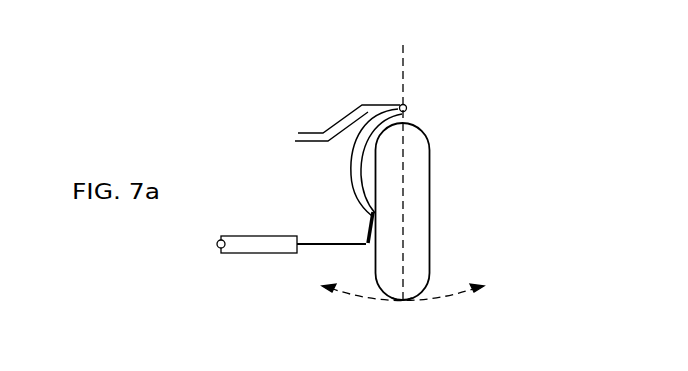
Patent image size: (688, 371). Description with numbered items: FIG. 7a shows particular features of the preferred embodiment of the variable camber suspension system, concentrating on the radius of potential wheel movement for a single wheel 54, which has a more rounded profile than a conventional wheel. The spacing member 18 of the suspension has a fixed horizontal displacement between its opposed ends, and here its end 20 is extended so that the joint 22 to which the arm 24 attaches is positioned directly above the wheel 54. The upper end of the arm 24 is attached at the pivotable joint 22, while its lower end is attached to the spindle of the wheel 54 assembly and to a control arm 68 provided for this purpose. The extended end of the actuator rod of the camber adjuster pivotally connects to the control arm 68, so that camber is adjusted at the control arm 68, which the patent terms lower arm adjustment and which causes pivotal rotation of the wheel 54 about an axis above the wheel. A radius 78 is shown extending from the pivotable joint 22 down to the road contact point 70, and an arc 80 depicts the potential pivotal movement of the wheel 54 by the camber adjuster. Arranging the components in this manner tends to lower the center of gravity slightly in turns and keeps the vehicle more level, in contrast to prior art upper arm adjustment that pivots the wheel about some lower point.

The spacing member 18 is at (294, 138).
The end of spacing member 20 is at (356, 108).
The joint 22 is at (408, 108).
The arm 24 is at (351, 168).
The wheel 54 is at (412, 191).
The control arm 68 is at (368, 229).
The road contact point 70 is at (402, 301).
The radius 78 is at (403, 70).
The arc 80 is at (445, 288).